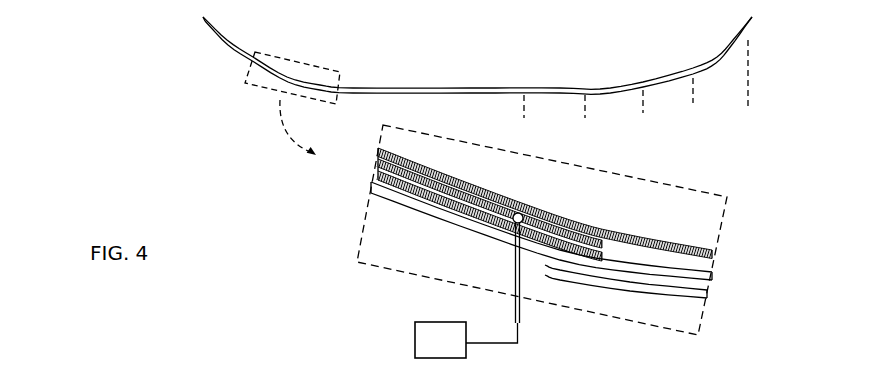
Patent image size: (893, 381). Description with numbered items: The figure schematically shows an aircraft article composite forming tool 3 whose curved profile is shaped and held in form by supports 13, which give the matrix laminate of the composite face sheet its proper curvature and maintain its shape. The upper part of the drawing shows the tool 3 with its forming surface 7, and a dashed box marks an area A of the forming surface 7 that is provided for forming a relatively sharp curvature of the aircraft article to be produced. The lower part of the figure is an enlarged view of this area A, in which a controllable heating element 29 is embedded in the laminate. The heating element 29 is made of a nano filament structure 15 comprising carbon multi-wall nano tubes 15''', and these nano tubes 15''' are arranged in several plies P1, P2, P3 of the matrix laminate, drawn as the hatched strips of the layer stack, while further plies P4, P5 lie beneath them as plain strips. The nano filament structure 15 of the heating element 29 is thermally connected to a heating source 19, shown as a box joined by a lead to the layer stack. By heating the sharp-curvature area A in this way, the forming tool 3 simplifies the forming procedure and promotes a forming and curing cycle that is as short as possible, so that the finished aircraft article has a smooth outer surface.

The aircraft article composite forming tool 3 is at (198, 79).
The forming surface 7 is at (449, 87).
The supports 13 is at (713, 88).
The area A is at (308, 44).
The nano filament structure 15 is at (497, 199).
The carbon multi-wall nano tubes 15''' is at (545, 203).
The ply P1 is at (533, 180).
The ply P2 is at (368, 160).
The ply P3 is at (366, 169).
The fourth layer position P4 is at (366, 179).
The fifth layer position P5 is at (360, 190).
The heating source 19 is at (540, 325).
The controllable heating element 29 is at (432, 270).